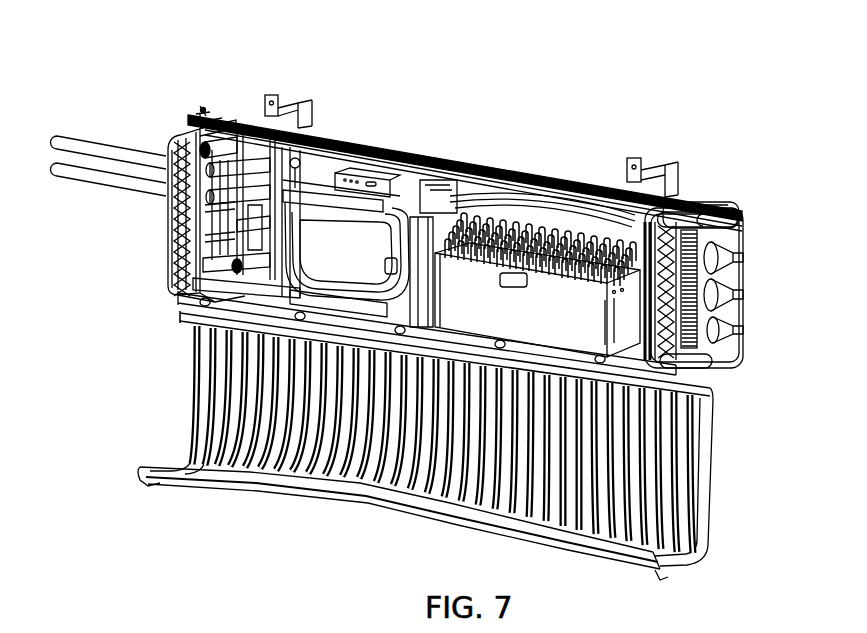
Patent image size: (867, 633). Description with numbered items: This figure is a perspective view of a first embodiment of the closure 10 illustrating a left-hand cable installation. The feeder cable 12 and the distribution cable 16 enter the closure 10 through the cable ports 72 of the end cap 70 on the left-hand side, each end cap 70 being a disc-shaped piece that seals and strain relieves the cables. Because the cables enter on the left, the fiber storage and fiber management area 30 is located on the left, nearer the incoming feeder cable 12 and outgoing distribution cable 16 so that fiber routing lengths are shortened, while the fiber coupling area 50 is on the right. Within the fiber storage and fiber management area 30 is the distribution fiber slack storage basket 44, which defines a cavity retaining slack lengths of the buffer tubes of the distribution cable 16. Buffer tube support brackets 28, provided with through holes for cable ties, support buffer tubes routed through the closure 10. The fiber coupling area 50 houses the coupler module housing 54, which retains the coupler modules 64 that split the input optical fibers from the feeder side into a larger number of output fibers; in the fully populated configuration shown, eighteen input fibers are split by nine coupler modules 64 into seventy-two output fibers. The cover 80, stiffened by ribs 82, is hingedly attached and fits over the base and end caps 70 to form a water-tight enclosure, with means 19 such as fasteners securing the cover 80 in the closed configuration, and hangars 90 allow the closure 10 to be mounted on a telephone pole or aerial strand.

The closure 10 is at (785, 483).
The feeder cable 12 is at (108, 132).
The distribution cable 16 is at (83, 167).
The means for securing the cover 19 is at (203, 108).
The buffer tube support bracket 28 is at (366, 172).
The fiber storage and fiber management area 30 is at (328, 132).
The distribution fiber slack storage basket 44 is at (347, 253).
The fiber coupling area 50 is at (540, 180).
The coupler module housing 54 is at (538, 322).
The coupler module 64 is at (602, 195).
The end cap 70 is at (163, 213).
The cable port 72 is at (747, 288).
The cover 80 is at (205, 484).
The ribs 82 is at (287, 433).
The hangar 90 is at (263, 95).